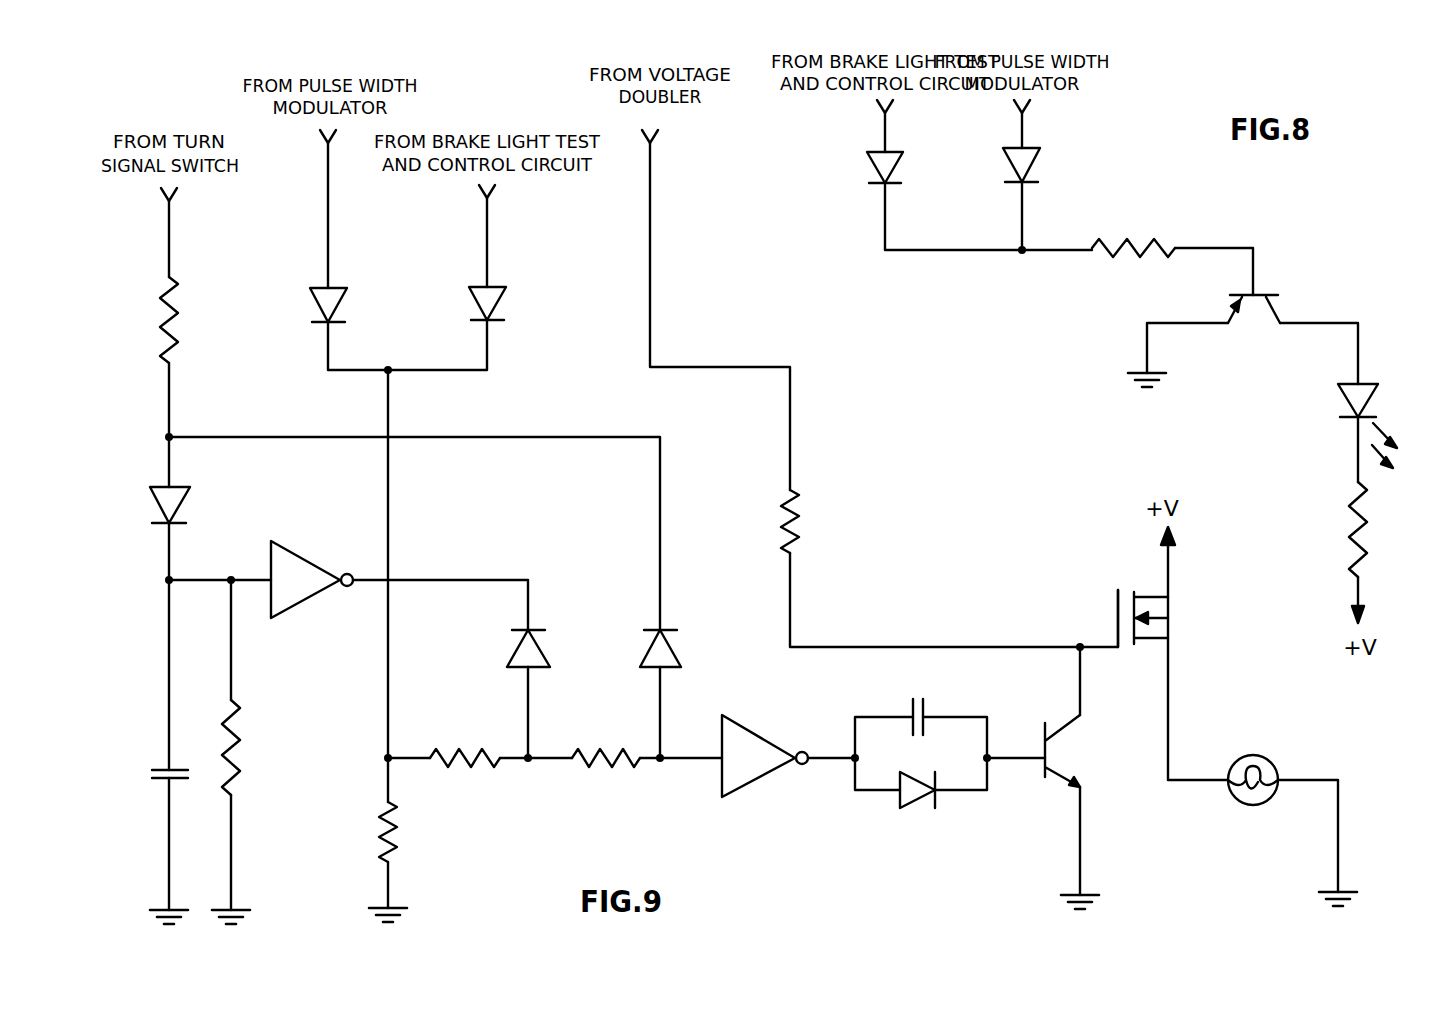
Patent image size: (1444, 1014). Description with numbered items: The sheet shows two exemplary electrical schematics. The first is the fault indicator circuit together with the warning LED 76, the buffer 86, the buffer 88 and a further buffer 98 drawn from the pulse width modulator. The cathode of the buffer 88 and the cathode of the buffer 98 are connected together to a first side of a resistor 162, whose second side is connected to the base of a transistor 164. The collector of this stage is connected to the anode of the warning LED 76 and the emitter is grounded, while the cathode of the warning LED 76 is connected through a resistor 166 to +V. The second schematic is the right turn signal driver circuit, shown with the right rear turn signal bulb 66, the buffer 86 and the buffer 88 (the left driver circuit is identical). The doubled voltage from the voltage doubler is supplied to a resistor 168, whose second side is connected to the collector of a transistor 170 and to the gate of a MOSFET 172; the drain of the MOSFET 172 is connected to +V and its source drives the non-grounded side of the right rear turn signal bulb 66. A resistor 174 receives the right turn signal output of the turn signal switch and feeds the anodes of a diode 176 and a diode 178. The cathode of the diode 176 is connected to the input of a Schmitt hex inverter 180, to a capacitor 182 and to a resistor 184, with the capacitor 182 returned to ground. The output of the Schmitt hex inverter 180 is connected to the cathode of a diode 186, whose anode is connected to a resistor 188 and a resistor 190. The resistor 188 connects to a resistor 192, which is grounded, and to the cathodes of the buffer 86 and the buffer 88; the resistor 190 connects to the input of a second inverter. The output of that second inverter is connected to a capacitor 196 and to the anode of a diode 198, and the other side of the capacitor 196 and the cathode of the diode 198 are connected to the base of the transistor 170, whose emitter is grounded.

In FIG. 9, the right rear turn signal bulb 66 is at (1258, 765).
In FIG. 8, the warning LED 76 is at (1345, 398).
In FIG. 9, the buffer 86 is at (340, 300).
In FIG. 9, the buffer 88 is at (500, 300).
In FIG. 8, the buffer 88 is at (868, 166).
In FIG. 8, the diode 98 is at (1035, 162).
In FIG. 8, the resistor 162 is at (1123, 237).
In FIG. 8, the transistor 164 is at (1255, 306).
In FIG. 8, the resistor 166 is at (1355, 513).
In FIG. 9, the resistor 168 is at (798, 519).
In FIG. 9, the transistor 170 is at (1058, 755).
In FIG. 9, the MOSFET 172 is at (1150, 609).
In FIG. 9, the resistor 174 is at (176, 351).
In FIG. 9, the diode 176 is at (180, 499).
In FIG. 9, the diode 178 is at (682, 648).
In FIG. 9, the Schmitt hex inverter 180 is at (306, 570).
In FIG. 9, the capacitor 182 is at (147, 778).
In FIG. 9, the resistor 184 is at (238, 740).
In FIG. 9, the diode 186 is at (540, 652).
In FIG. 9, the resistor 188 is at (470, 736).
In FIG. 9, the resistor 190 is at (587, 764).
In FIG. 9, the resistor 192 is at (400, 810).
In FIG. 9, the capacitor 196 is at (943, 686).
In FIG. 9, the diode 198 is at (923, 797).